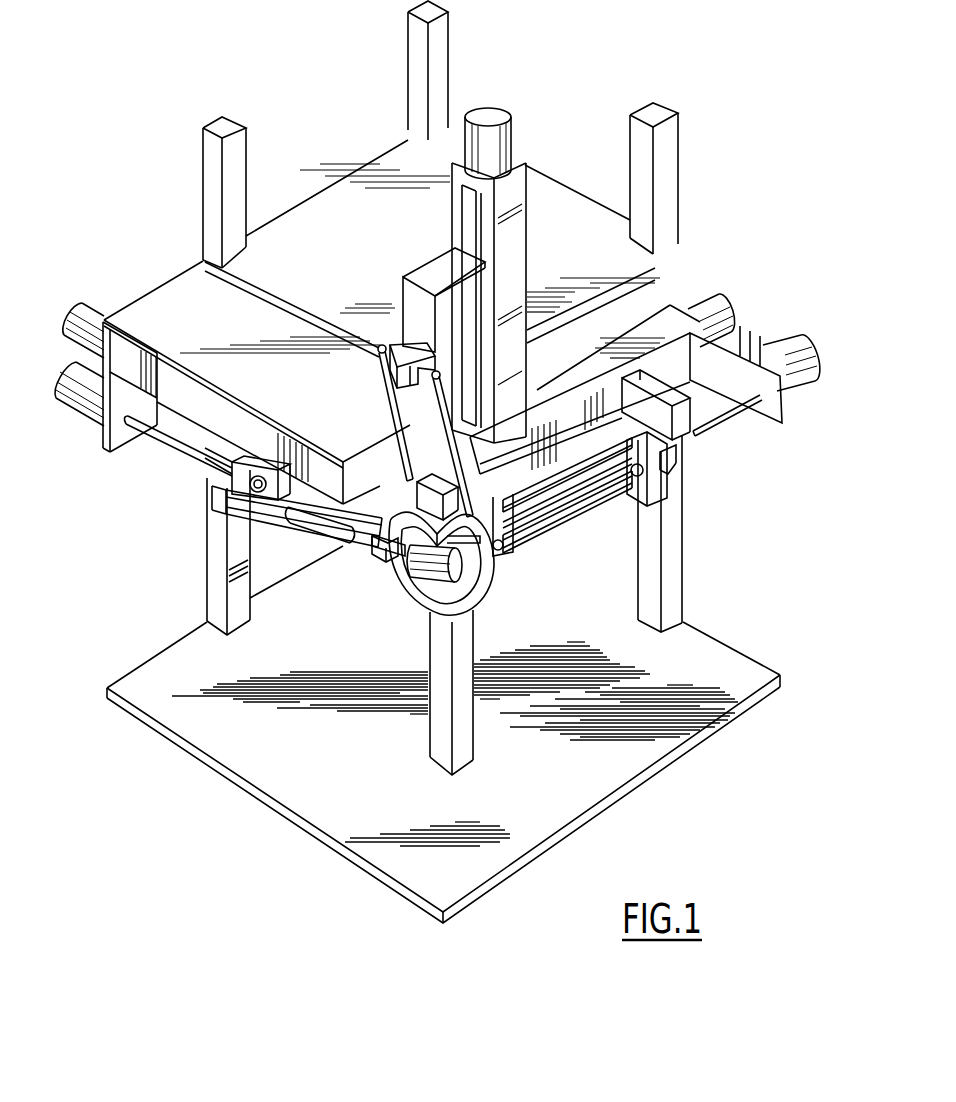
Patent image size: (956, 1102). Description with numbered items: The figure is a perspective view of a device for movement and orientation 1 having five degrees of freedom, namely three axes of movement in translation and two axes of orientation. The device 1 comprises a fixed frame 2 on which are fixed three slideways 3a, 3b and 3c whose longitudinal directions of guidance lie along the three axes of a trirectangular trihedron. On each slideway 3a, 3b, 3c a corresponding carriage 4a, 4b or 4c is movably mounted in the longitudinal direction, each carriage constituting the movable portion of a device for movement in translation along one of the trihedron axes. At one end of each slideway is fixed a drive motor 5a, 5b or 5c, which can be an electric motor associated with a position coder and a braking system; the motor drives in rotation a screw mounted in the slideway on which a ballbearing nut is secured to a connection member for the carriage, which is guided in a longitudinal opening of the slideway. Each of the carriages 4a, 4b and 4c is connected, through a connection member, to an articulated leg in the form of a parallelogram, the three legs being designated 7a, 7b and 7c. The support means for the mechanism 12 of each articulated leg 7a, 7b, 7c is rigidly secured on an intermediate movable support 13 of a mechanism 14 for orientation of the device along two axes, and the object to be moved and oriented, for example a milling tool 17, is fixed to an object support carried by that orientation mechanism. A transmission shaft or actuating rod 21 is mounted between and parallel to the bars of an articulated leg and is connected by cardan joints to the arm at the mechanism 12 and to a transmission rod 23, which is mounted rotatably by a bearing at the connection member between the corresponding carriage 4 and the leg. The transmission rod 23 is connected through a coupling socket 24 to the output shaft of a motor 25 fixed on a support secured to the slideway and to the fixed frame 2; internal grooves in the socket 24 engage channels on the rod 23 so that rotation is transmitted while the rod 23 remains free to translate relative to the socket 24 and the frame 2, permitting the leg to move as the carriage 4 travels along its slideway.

The device for movement and orientation 1 is at (440, 388).
The fixed frame 2 is at (683, 654).
The slideway 3a is at (128, 360).
The slideway 3b is at (572, 390).
The slideway 3c is at (515, 265).
The carriage 4 is at (684, 455).
The carriage 4a is at (203, 455).
The carriage 4b is at (688, 428).
The carriage 4c is at (418, 278).
The drive motor 5a is at (80, 305).
The drive motor 5b is at (734, 314).
The drive motor 5c is at (495, 118).
The articulated leg 7a is at (311, 548).
The articulated leg 7b is at (603, 524).
The articulated leg 7c is at (380, 412).
The mechanism 12 is at (378, 552).
The intermediate movable support 13 is at (417, 497).
The mechanism for orientation 14 is at (413, 620).
The tool 17 is at (412, 606).
The transmission shaft or actuating rod 21 is at (298, 540).
The transmission rod 23 is at (152, 446).
The coupling socket 24 is at (727, 422).
The motor 25 is at (78, 430).